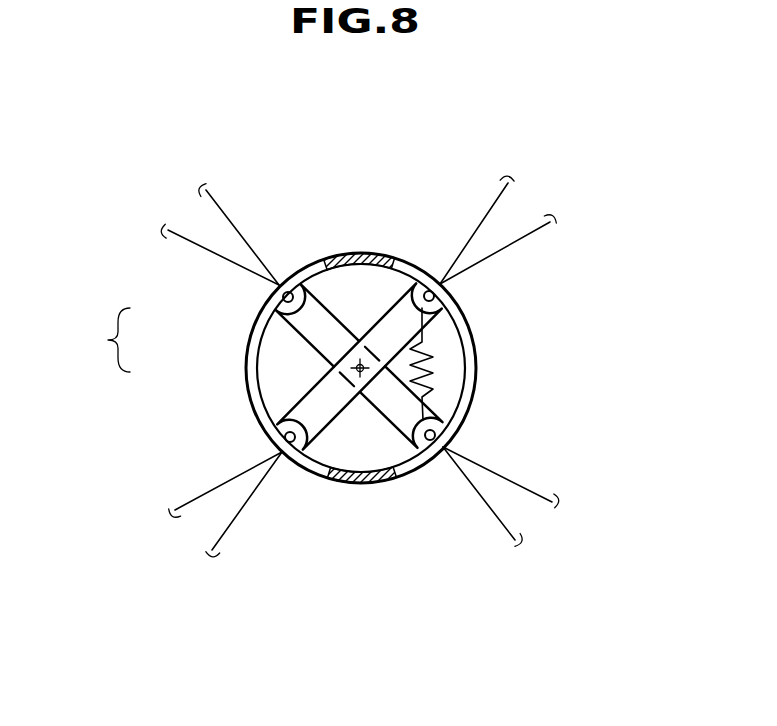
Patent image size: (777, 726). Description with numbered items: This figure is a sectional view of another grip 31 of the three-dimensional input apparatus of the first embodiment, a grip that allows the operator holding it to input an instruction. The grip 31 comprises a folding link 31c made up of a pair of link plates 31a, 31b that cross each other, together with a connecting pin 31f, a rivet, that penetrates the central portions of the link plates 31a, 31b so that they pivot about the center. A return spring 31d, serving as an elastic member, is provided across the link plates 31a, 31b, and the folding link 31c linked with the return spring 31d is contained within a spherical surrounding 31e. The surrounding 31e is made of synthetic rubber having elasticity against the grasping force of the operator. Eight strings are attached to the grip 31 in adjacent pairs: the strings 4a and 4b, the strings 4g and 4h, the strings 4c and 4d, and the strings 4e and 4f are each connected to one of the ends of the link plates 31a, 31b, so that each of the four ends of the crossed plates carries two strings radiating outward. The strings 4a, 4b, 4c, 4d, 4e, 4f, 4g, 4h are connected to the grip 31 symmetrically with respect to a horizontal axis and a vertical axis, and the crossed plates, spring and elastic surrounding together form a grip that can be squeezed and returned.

The grip 31 is at (383, 149).
The link plate 31a is at (303, 322).
The link plate 31b is at (320, 398).
The folding link 31c is at (91, 340).
The return spring 31d is at (421, 375).
The spherical surrounding 31e is at (350, 256).
The connecting pin 31f is at (365, 363).
The string 4a is at (191, 241).
The string 4b is at (238, 228).
The string 4c is at (482, 221).
The string 4d is at (517, 242).
The string 4e is at (230, 526).
The string 4f is at (217, 486).
The string 4g is at (528, 488).
The string 4h is at (500, 520).